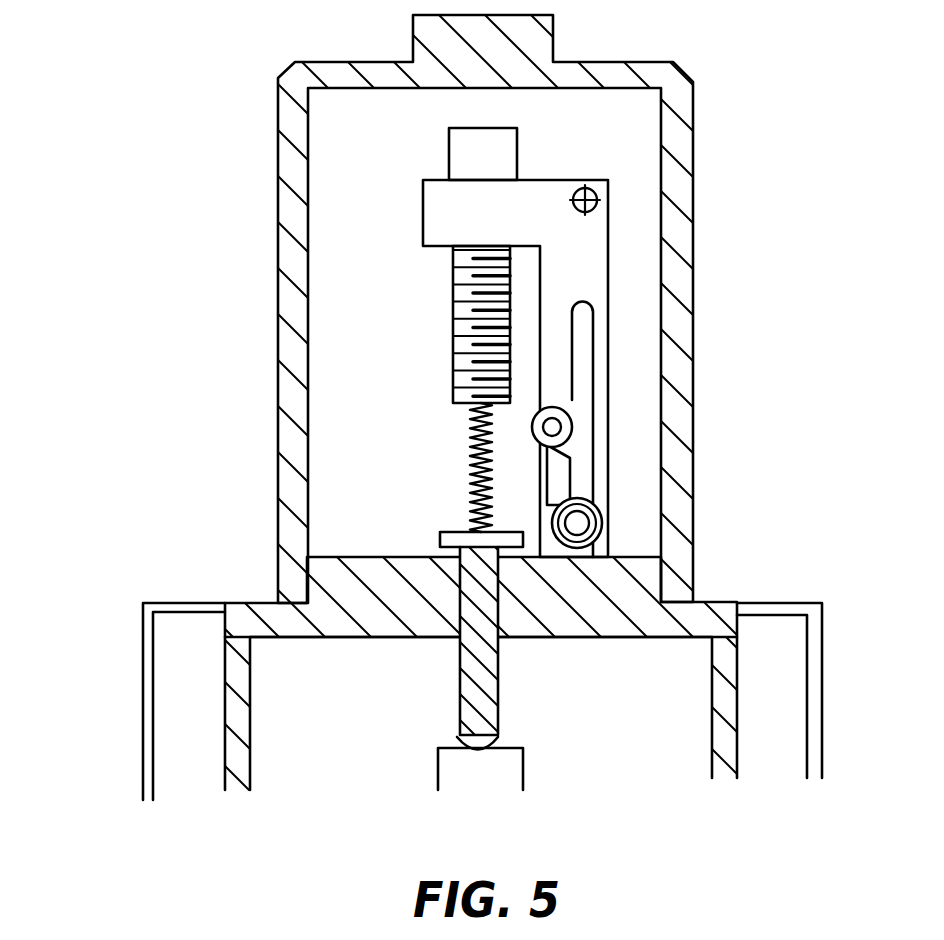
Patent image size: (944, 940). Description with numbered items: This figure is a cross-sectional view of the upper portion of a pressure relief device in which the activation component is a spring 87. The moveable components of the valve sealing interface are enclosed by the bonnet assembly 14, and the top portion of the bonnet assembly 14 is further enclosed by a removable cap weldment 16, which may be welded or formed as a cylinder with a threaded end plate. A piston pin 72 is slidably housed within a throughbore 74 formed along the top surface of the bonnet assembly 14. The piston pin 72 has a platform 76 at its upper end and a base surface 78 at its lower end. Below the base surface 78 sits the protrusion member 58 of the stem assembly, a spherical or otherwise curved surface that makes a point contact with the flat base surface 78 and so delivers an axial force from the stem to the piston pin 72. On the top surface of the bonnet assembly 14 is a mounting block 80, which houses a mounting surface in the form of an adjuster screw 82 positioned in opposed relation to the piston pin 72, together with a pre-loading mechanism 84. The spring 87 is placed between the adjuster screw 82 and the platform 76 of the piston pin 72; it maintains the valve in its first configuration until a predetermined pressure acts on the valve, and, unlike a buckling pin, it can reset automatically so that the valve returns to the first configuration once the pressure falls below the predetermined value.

The bonnet assembly 14 is at (665, 588).
The cap weldment 16 is at (278, 228).
The protrusion member 58 is at (500, 742).
The piston pin 72 is at (465, 660).
The throughbore 74 is at (307, 568).
The platform 76 is at (440, 531).
The base surface 78 is at (466, 737).
The mounting block 80 is at (582, 275).
The adjuster screw 82 is at (453, 320).
The pre-loading mechanism 84 is at (582, 443).
The spring 87 is at (460, 457).